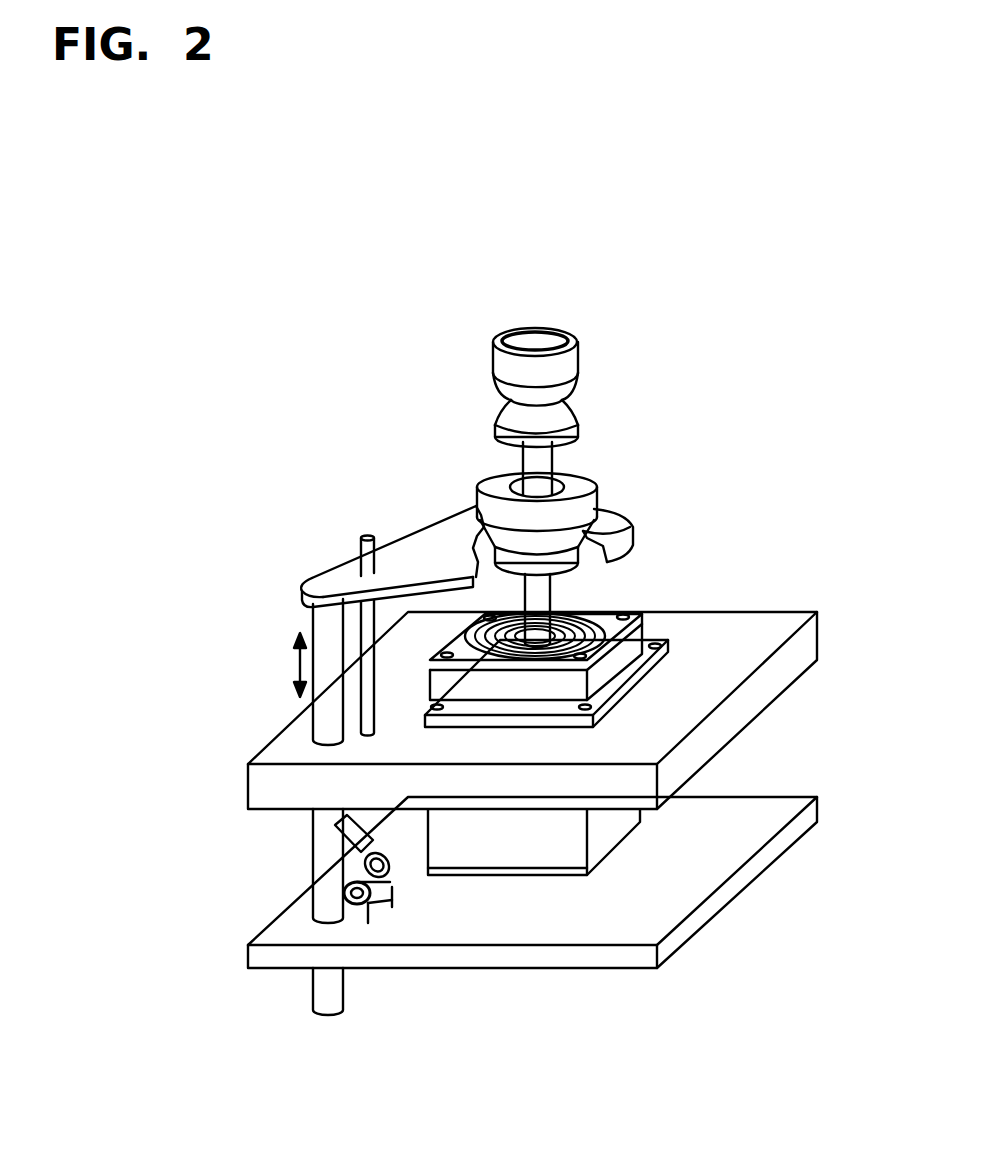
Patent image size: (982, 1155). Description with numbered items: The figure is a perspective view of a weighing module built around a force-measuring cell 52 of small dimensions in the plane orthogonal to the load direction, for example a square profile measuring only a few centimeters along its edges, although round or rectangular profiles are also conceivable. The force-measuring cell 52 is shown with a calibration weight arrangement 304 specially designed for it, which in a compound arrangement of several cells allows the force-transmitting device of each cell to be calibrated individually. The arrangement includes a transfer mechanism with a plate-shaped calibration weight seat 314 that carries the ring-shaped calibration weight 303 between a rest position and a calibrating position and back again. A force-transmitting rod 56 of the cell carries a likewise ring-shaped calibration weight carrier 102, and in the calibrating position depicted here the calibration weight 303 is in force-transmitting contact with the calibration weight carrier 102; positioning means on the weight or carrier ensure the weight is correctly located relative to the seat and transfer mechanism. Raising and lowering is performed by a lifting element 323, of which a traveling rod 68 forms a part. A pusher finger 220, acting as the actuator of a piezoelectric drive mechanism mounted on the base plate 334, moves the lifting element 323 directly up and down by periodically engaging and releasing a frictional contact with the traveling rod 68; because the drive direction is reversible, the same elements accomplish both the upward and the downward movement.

The force-measuring cell 52 is at (718, 533).
The force-transmitting rod 56 is at (542, 470).
The traveling rod 68 is at (327, 722).
The calibration weight carrier 102 is at (552, 555).
The pusher finger 220 is at (352, 837).
The calibration weight 303 is at (577, 489).
The calibration weight arrangement 304 is at (378, 483).
The calibration weight seat 314 is at (447, 533).
The lifting element 323 is at (300, 573).
The base plate 334 is at (673, 893).